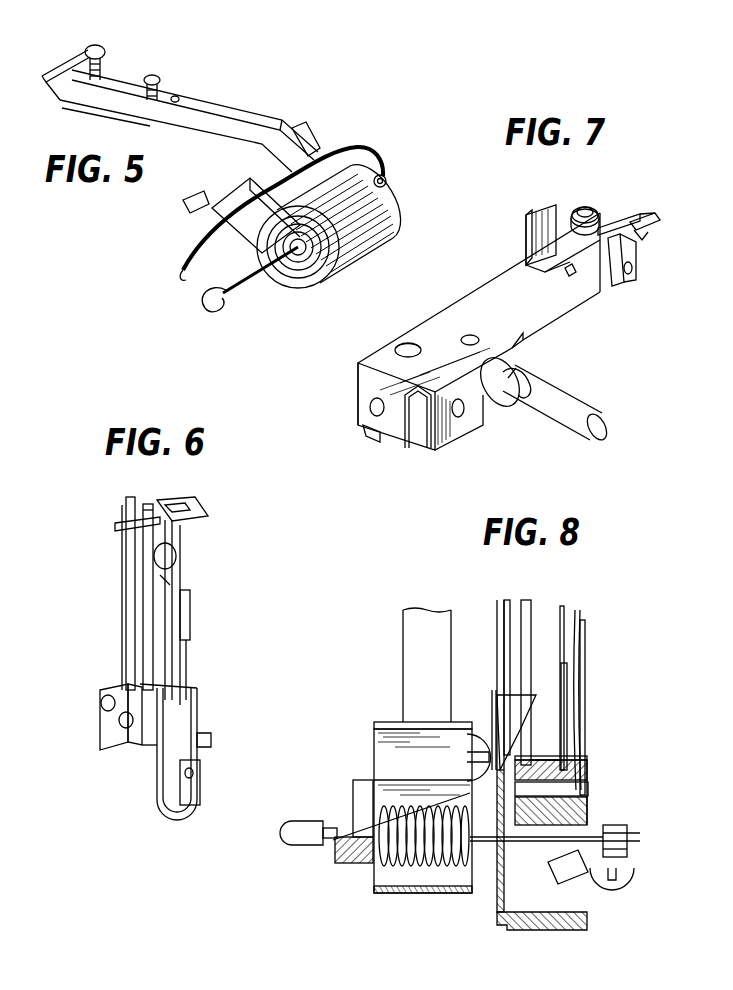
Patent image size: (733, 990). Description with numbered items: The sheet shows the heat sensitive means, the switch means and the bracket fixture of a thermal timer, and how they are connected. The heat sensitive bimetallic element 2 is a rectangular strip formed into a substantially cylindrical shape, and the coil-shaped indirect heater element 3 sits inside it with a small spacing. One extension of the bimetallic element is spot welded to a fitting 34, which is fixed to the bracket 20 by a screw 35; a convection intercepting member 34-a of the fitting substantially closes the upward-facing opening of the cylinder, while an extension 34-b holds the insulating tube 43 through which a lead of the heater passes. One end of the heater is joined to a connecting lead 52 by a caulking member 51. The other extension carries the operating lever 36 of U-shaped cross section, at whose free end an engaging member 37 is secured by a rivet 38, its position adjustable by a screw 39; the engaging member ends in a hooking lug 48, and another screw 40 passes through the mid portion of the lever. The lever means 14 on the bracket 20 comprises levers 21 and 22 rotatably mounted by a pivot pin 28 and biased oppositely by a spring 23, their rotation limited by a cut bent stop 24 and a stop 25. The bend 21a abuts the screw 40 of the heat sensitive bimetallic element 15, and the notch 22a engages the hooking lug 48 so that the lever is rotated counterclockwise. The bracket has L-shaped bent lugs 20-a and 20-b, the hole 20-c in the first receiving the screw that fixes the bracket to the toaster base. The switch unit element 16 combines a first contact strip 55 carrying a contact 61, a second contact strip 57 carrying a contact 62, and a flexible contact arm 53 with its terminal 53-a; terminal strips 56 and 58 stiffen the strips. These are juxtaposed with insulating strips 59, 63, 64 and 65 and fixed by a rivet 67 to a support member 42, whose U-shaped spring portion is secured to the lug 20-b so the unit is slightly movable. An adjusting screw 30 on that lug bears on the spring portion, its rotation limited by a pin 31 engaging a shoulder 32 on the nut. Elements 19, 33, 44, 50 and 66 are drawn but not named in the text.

In FIG. 5, the heat sensitive bimetallic element 2 is at (308, 135).
In FIG. 8, the heat sensitive bimetallic element 2 is at (374, 742).
In FIG. 5, the indirect heater element 3 is at (236, 286).
In FIG. 8, the indirect heater element 3 is at (398, 870).
In FIG. 7, the lever means 14 is at (608, 365).
In FIG. 5, the heat sensitive bimetallic element 15 is at (357, 125).
In FIG. 6, the unit element 16 is at (234, 695).
In FIG. 6, the contact tab 19 is at (207, 513).
In FIG. 7, the bracket 20 is at (498, 288).
In FIG. 8, the bracket 20 is at (500, 620).
In FIG. 7, the L-shaped bent lug 20-a is at (357, 378).
In FIG. 7, the L-shaped bent lug 20-b is at (450, 440).
In FIG. 7, the hole 20-c is at (370, 407).
In FIG. 7, the lever 21 is at (548, 215).
In FIG. 7, the bend of lever 21a is at (528, 222).
In FIG. 7, the lever 22 is at (645, 216).
In FIG. 7, the notch 22a is at (659, 239).
In FIG. 7, the spring 23 is at (612, 222).
In FIG. 7, the cut bent stop 24 is at (575, 276).
In FIG. 7, the stop 25 is at (636, 258).
In FIG. 7, the pivot pin 28 is at (585, 208).
In FIG. 7, the adjusting screw 30 is at (572, 432).
In FIG. 7, the pin 31 is at (485, 398).
In FIG. 7, the shoulder 32 is at (525, 372).
In FIG. 8, the vertical plate 33 is at (496, 878).
In FIG. 5, the fitting 34 is at (245, 195).
In FIG. 8, the fitting 34 is at (494, 695).
In FIG. 8, the convection intercepting member 34-a is at (384, 723).
In FIG. 8, the extension of fitting 34-b is at (364, 782).
In FIG. 8, the screw 35 is at (470, 735).
In FIG. 5, the operating lever 36 is at (262, 118).
In FIG. 8, the operating lever 36 is at (405, 662).
In FIG. 5, the engaging member 37 is at (70, 60).
In FIG. 5, the rivet 38 is at (178, 97).
In FIG. 5, the screw 39 is at (100, 56).
In FIG. 5, the screw 40 is at (155, 80).
In FIG. 6, the support member 42 is at (198, 795).
In FIG. 8, the support member 42 is at (590, 820).
In FIG. 5, the insulating tube 43 is at (388, 192).
In FIG. 8, the insulating tube 43 is at (338, 862).
In FIG. 5, the plunger / wire 44 is at (192, 250).
In FIG. 8, the plunger / wire 44 is at (318, 822).
In FIG. 5, the hooking lug 48 is at (44, 76).
In FIG. 7, the hole 50 is at (416, 344).
In FIG. 5, the caulking member 51 is at (388, 184).
In FIG. 5, the connecting lead 52 is at (178, 275).
In FIG. 6, the flexible contact arm 53 is at (146, 505).
In FIG. 8, the flexible contact arm 53 is at (530, 604).
In FIG. 6, the terminal 53-a is at (102, 686).
In FIG. 6, the first contact strip 55 is at (181, 546).
In FIG. 8, the first contact strip 55 is at (580, 610).
In FIG. 6, the terminal strip 56 is at (190, 615).
In FIG. 8, the terminal strip 56 is at (586, 626).
In FIG. 8, the second contact strip 57 is at (563, 608).
In FIG. 6, the terminal strip 58 is at (186, 650).
In FIG. 8, the terminal strip 58 is at (568, 668).
In FIG. 6, the insulating strip 59 is at (127, 506).
In FIG. 8, the insulating strip 59 is at (507, 602).
In FIG. 6, the contact 61 is at (175, 560).
In FIG. 6, the contact 62 is at (168, 582).
In FIG. 8, the insulating strip 63 is at (588, 766).
In FIG. 8, the insulating strip 64 is at (585, 760).
In FIG. 8, the insulating strip 65 is at (565, 758).
In FIG. 6, the insulator block 66 is at (150, 755).
In FIG. 8, the insulator block 66 is at (545, 758).
In FIG. 8, the rivet 67 is at (590, 790).